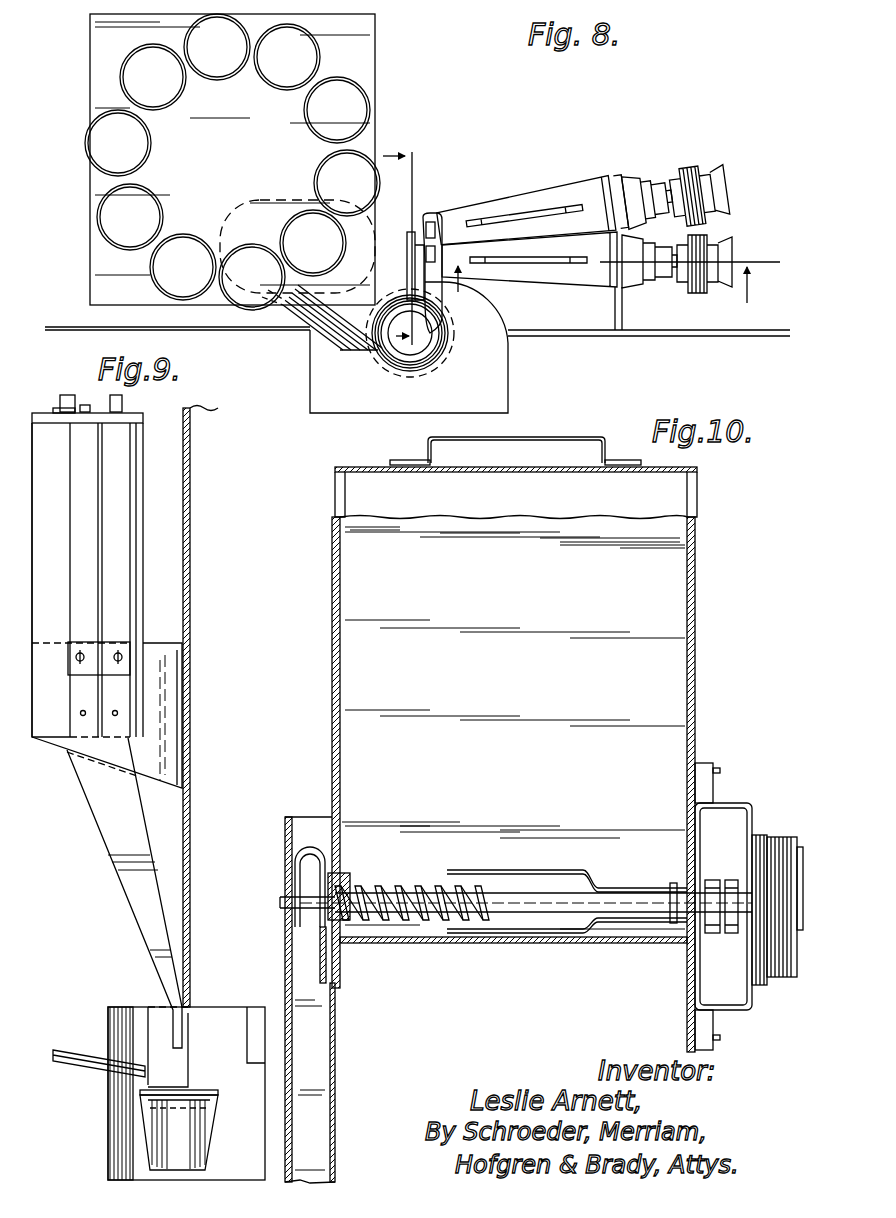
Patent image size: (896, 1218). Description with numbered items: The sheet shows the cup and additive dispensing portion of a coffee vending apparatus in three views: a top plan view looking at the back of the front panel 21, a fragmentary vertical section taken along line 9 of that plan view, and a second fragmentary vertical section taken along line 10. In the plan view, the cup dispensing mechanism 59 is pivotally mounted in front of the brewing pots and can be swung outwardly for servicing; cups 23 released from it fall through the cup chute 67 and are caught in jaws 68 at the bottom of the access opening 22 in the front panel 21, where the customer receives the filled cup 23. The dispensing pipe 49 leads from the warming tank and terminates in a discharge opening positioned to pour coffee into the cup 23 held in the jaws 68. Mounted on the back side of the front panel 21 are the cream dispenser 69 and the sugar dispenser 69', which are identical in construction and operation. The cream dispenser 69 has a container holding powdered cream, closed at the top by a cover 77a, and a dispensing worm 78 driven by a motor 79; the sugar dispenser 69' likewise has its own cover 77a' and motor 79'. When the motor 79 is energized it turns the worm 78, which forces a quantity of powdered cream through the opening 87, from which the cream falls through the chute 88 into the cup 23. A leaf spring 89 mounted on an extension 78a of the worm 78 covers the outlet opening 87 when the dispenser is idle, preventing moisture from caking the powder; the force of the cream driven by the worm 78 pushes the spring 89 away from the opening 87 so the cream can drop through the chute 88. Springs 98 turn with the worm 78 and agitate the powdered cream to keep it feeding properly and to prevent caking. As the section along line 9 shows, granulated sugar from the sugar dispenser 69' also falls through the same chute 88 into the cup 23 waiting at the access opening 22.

In FIG. 8, the cup dispensing mechanism 59 is at (220, 160).
In FIG. 8, the cup chute 67 is at (307, 333).
In FIG. 8, the access opening 22 is at (313, 370).
In FIG. 9, the access opening 22 is at (217, 1048).
In FIG. 8, the cup 23 is at (420, 364).
In FIG. 9, the cup 23 is at (192, 1147).
In FIG. 8, the section line 9— 9 is at (397, 240).
In FIG. 8, the dispensing pipe 49 is at (410, 241).
In FIG. 9, the dispensing pipe 49 is at (73, 1064).
In FIG. 8, the chute 88 is at (441, 320).
In FIG. 9, the chute 88 is at (120, 830).
In FIG. 10, the chute 88 is at (313, 1032).
In FIG. 8, the front panel 21 is at (580, 336).
In FIG. 9, the front panel 21 is at (191, 505).
In FIG. 8, the cream dispenser 69 is at (529, 277).
In FIG. 9, the cream dispenser 69 is at (107, 600).
In FIG. 10, the cream dispenser 69 is at (541, 784).
In FIG. 8, the cover 77a is at (627, 283).
In FIG. 9, the cover 77a is at (147, 401).
In FIG. 10, the cover 77a is at (512, 487).
In FIG. 8, the motor 79 is at (702, 276).
In FIG. 10, the motor 79 is at (749, 906).
In FIG. 8, the sugar dispenser 69' is at (532, 201).
In FIG. 9, the sugar dispenser 69' is at (35, 604).
In FIG. 8, the cover of sugar dispenser 77a' is at (615, 189).
In FIG. 9, the cover of sugar dispenser 77a' is at (56, 391).
In FIG. 8, the motor of sugar dispenser 79' is at (683, 178).
In FIG. 8, the section line 10— 10 is at (613, 284).
In FIG. 9, the jaws 68 is at (207, 1100).
In FIG. 10, the leaf spring 89 is at (296, 843).
In FIG. 10, the opening 87 is at (350, 885).
In FIG. 10, the extension of the worm 78a is at (290, 902).
In FIG. 10, the dispensing worm 78 is at (399, 886).
In FIG. 10, the springs 98 is at (534, 870).